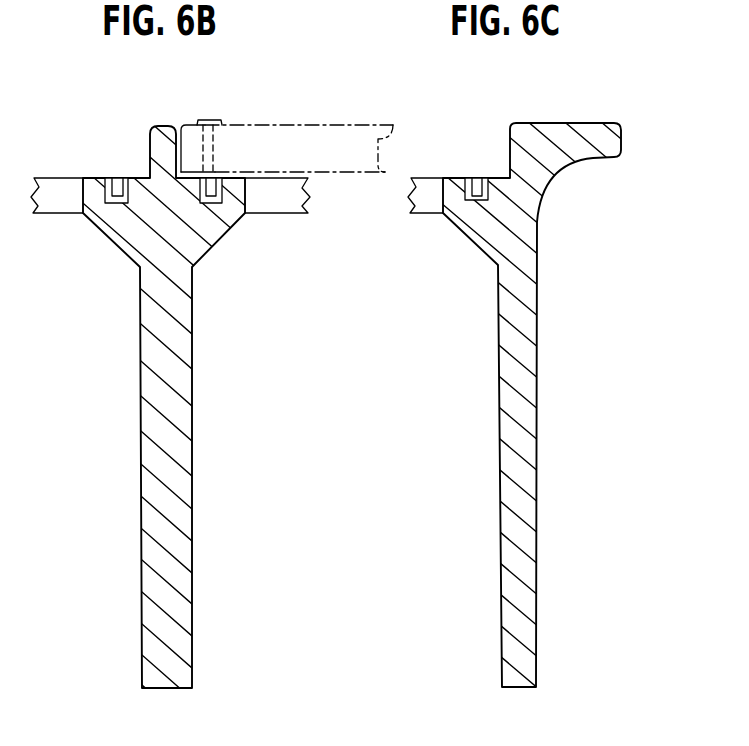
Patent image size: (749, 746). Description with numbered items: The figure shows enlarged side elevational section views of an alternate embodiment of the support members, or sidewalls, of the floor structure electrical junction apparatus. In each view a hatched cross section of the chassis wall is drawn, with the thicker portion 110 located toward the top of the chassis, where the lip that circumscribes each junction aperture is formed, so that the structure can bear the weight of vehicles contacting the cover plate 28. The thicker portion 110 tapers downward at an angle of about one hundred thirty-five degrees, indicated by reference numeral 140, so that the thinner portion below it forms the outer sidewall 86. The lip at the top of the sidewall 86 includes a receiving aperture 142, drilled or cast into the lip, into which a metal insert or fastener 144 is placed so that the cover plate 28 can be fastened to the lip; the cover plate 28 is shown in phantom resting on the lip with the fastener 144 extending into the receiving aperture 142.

In FIG. 6B, the cover plate 28 is at (257, 138).
In FIG. 6C, the outside sidewall 86 is at (525, 412).
In FIG. 6C, the thicker portion 110 is at (374, 373).
In FIG. 6B, the taper angle of about 135 degrees 140 is at (106, 304).
In FIG. 6C, the taper angle of about 135 degrees 140 is at (460, 322).
In FIG. 6B, the receiving aperture 142 is at (118, 176).
In FIG. 6C, the receiving aperture 142 is at (472, 177).
In FIG. 6B, the fastener 144 is at (197, 108).